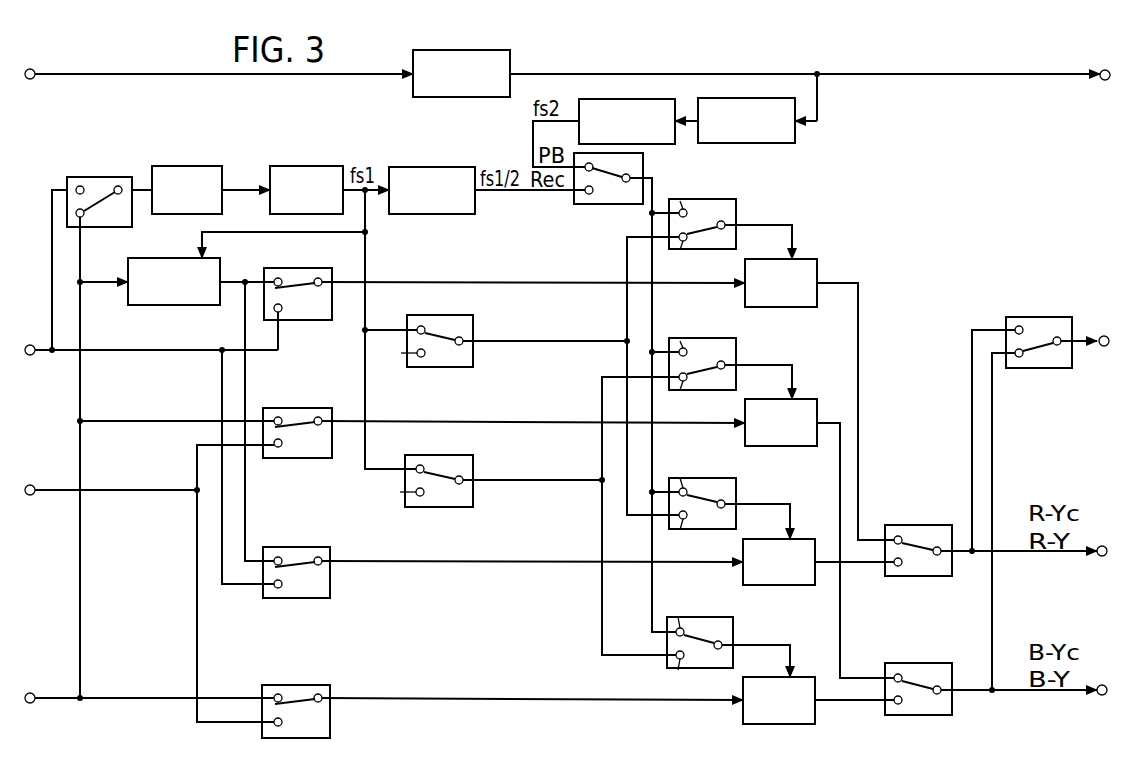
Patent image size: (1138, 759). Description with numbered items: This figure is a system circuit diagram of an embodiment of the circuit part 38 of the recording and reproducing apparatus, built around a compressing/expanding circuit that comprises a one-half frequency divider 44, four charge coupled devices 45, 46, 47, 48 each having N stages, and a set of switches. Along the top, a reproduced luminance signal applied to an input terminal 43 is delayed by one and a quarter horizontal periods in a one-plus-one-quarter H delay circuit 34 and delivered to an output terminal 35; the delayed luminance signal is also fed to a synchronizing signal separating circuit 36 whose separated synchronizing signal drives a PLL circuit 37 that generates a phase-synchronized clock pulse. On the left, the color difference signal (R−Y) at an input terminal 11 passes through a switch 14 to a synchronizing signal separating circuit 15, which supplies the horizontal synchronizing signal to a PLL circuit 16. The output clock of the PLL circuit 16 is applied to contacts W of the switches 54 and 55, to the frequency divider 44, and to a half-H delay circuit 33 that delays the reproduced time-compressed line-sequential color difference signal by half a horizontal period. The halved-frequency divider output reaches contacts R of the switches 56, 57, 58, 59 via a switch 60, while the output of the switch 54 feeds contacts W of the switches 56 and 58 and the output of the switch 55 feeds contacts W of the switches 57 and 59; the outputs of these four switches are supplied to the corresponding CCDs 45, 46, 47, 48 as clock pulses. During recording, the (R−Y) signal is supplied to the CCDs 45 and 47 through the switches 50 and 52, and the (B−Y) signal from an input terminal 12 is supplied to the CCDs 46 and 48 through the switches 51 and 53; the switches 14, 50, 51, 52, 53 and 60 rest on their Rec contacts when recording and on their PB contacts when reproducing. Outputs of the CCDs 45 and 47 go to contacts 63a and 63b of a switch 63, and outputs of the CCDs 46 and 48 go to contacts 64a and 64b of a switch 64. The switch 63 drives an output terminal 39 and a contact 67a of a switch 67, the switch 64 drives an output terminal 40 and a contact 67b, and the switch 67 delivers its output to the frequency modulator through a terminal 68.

The input terminal 43 is at (33, 68).
The (1+1/4)H delay circuit 34 is at (510, 62).
The output terminal 35 is at (1105, 69).
The circuit part 38 is at (975, 65).
The synchronizing signal separating circuit 36 is at (795, 132).
The PLL circuit 37 is at (622, 99).
The switch 14 is at (113, 176).
The synchronizing signal separating circuit 15 is at (178, 166).
The PLL circuit 16 is at (303, 166).
The 1/2 frequency divider 44 is at (427, 167).
The input terminal 11 is at (32, 347).
The input terminal 12 is at (32, 483).
The H/2 delay circuit 33 is at (175, 252).
The switch 50 is at (302, 322).
The switch 51 is at (302, 460).
The switch 52 is at (296, 600).
The switch 53 is at (330, 714).
The switch 54 is at (473, 327).
The switch 55 is at (473, 467).
The switch 56 is at (703, 199).
The switch 57 is at (703, 338).
The switch 58 is at (736, 490).
The switch 59 is at (733, 630).
The charge coupled device 45 is at (800, 259).
The charge coupled device 46 is at (800, 399).
The charge coupled device 47 is at (800, 539).
The charge coupled device 48 is at (800, 677).
The switch 60 is at (584, 208).
The switch 63 is at (917, 551).
The contact 63a is at (898, 536).
The contact 63b is at (898, 566).
The switch 64 is at (928, 691).
The contact 64a is at (898, 674).
The contact 64b is at (898, 704).
The switch 67 is at (1051, 346).
The contact 67a is at (1019, 326).
The contact 67b is at (1020, 357).
The terminal 68 is at (1104, 335).
The output terminal 39 is at (1103, 556).
The output terminal 40 is at (1103, 695).